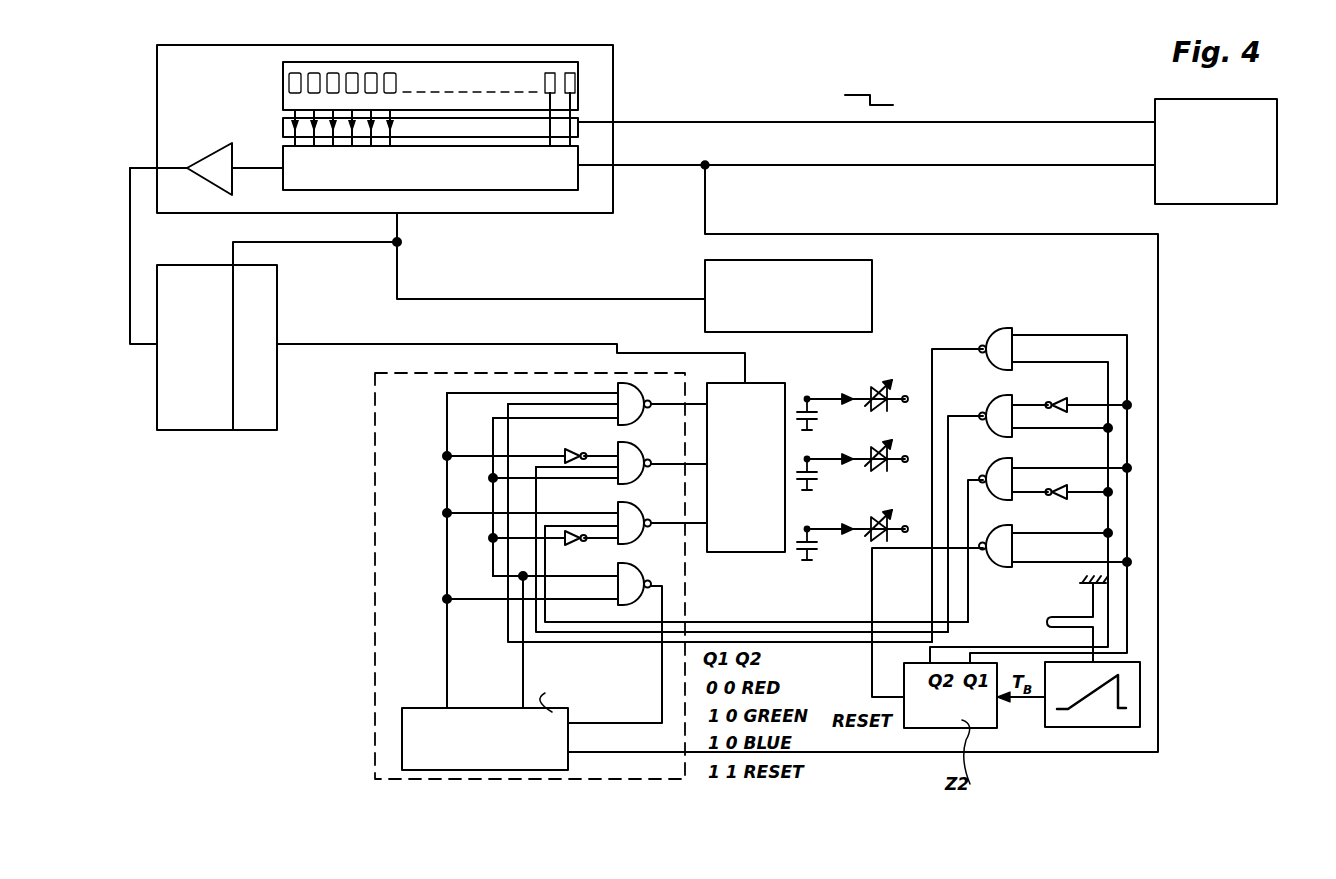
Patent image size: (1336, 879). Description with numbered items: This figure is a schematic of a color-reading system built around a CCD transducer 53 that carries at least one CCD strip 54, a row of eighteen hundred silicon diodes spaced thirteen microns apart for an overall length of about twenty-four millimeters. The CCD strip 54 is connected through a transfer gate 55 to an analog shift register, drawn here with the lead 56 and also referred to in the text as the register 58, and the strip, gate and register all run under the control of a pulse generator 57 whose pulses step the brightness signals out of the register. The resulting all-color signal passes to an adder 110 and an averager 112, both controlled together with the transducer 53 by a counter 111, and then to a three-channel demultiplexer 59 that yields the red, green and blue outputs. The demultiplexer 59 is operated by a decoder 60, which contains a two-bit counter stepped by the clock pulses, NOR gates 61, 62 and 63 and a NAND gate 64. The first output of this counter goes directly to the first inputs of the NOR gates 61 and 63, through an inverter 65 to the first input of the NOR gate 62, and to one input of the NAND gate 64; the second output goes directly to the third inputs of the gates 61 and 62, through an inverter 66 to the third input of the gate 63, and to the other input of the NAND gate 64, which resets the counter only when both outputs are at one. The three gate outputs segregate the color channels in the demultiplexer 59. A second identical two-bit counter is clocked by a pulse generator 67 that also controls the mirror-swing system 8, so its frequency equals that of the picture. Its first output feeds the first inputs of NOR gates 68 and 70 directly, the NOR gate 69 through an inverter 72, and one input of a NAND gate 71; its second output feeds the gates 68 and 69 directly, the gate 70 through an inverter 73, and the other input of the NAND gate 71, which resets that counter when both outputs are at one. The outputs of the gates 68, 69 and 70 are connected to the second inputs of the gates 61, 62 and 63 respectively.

The CCD transducer 53 is at (157, 78).
The CCD strip 54 is at (576, 65).
The transfer gate 55 is at (576, 126).
The analog shift register 56 is at (576, 156).
The pulse generator 57 is at (1155, 140).
The analog shift register 58 is at (206, 145).
The three-channel demultiplexer 59 is at (778, 383).
The decoder 60 is at (671, 562).
The NOR gate 61 is at (614, 382).
The NOR gate 62 is at (614, 450).
The NOR gate 63 is at (614, 510).
The NAND gate 64 is at (634, 575).
The inverter 65 is at (567, 450).
The inverter 66 is at (572, 545).
The pulse generator 67 is at (1078, 720).
The NOR gate 68 is at (1002, 335).
The NOR gate 69 is at (1008, 400).
The NOR gate 70 is at (1008, 463).
The NAND gate 71 is at (1008, 530).
The inverter 72 is at (1058, 398).
The inverter 73 is at (1062, 500).
The mirror-swing system 8 is at (1060, 614).
The adder 110 is at (180, 418).
The counter 111 is at (868, 304).
The averager 112 is at (280, 307).